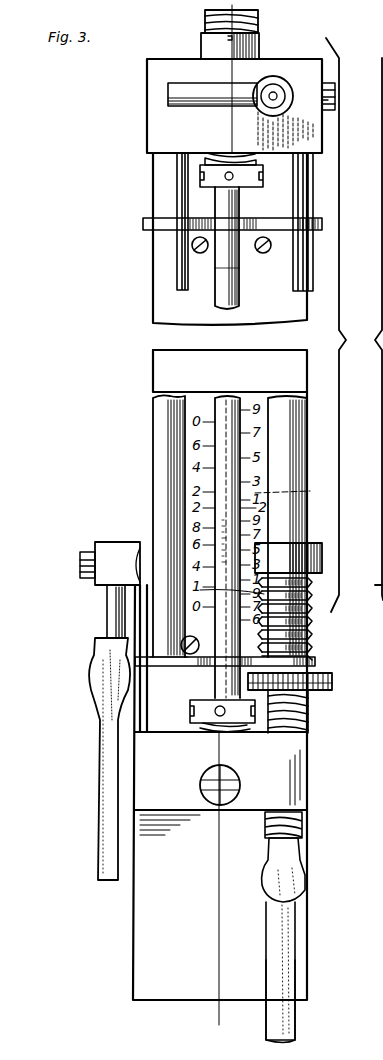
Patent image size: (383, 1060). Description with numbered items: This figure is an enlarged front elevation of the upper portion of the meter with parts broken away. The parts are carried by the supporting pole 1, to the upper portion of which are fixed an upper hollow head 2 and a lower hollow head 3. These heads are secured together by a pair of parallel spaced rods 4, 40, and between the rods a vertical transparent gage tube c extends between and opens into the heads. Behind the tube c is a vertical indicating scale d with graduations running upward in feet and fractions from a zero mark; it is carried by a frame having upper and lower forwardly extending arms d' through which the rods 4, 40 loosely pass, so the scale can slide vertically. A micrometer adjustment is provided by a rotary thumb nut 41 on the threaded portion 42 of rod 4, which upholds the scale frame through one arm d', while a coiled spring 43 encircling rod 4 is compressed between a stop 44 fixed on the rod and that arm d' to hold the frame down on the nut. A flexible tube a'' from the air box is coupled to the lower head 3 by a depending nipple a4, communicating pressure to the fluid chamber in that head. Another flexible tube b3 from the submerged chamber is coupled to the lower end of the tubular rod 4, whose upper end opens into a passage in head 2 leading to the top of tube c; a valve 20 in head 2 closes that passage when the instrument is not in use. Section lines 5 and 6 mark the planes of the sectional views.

The supporting pole 1 is at (261, 18).
The upper hollow head 2 is at (155, 126).
The lower hollow head 3 is at (215, 392).
The spaced rod 4 is at (300, 472).
The section line 5 is at (208, 8).
The section line 6 is at (215, 270).
The valve 20 is at (278, 80).
The spaced rod 40 is at (152, 488).
The thumb nut 41 is at (325, 690).
The threaded portion 42 is at (310, 726).
The coiled spring 43 is at (315, 630).
The stop 44 is at (320, 560).
The transparent gage tube c is at (240, 276).
The indicating scale d is at (237, 590).
The forwardly extending arm d' is at (233, 437).
The depending nipple a4 is at (114, 612).
The flexible tube a'' is at (94, 759).
The flexible tube b3 is at (284, 998).